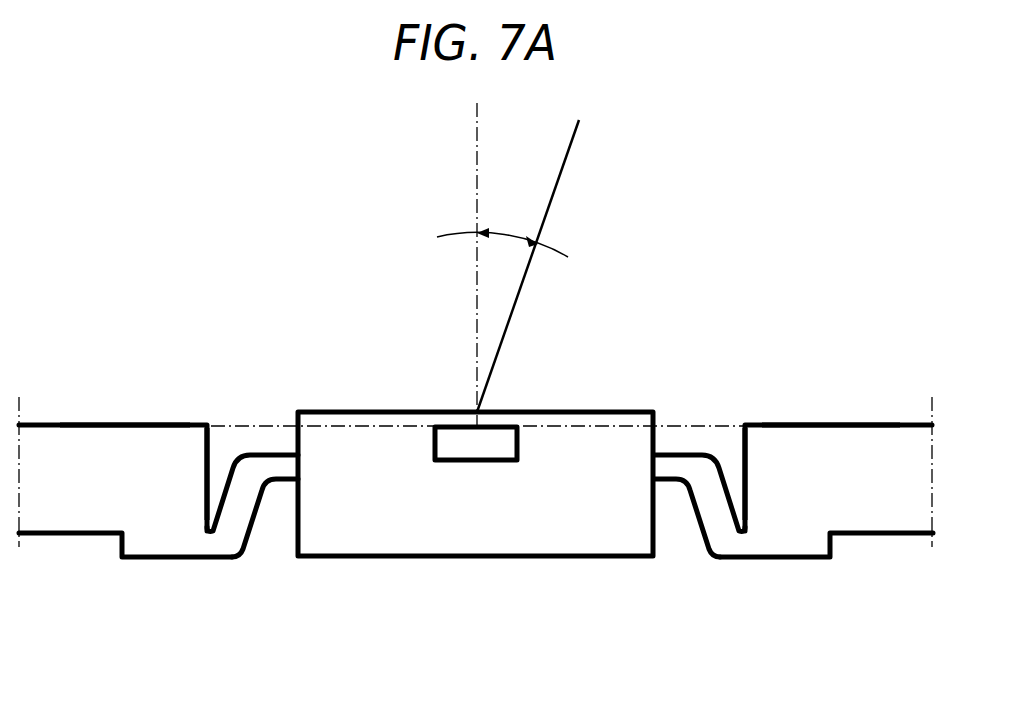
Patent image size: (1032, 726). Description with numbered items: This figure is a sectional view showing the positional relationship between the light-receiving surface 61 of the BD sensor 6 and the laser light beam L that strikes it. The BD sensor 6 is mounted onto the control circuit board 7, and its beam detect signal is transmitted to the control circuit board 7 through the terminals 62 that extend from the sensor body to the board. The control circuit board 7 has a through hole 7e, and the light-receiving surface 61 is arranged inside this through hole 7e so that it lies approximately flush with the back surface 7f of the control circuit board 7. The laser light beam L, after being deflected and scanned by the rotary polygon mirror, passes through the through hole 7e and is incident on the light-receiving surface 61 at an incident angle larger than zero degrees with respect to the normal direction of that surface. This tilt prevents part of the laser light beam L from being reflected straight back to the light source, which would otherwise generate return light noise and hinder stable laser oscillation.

The BD sensor 6 is at (453, 533).
The light-receiving surface 61 is at (455, 427).
The terminals 62 is at (201, 543).
The control circuit board 7 is at (82, 503).
The through hole 7e is at (207, 452).
The back surface 7f is at (105, 425).
The laser light beam L is at (563, 177).